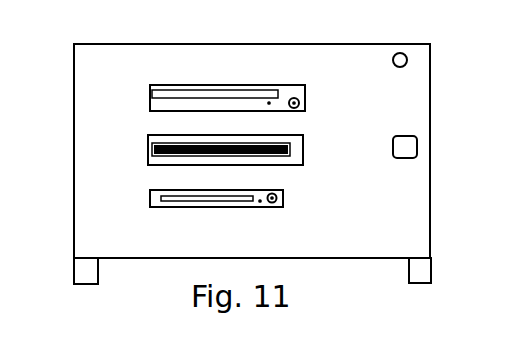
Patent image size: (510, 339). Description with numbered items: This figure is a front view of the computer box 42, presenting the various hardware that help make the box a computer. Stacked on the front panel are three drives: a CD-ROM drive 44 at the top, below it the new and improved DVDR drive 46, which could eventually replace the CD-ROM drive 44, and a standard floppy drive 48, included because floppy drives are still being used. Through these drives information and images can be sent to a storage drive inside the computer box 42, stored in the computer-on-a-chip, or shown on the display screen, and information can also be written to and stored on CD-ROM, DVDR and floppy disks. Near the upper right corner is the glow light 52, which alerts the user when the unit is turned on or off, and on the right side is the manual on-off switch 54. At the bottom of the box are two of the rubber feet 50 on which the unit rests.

The computer box 42 is at (103, 60).
The CD-ROM drive 44 is at (143, 96).
The DVDR drive 46 is at (139, 148).
The floppy drive 48 is at (139, 198).
The rubber feet 50 is at (93, 275).
The glow light 52 is at (389, 52).
The manual on-off switch 54 is at (420, 143).